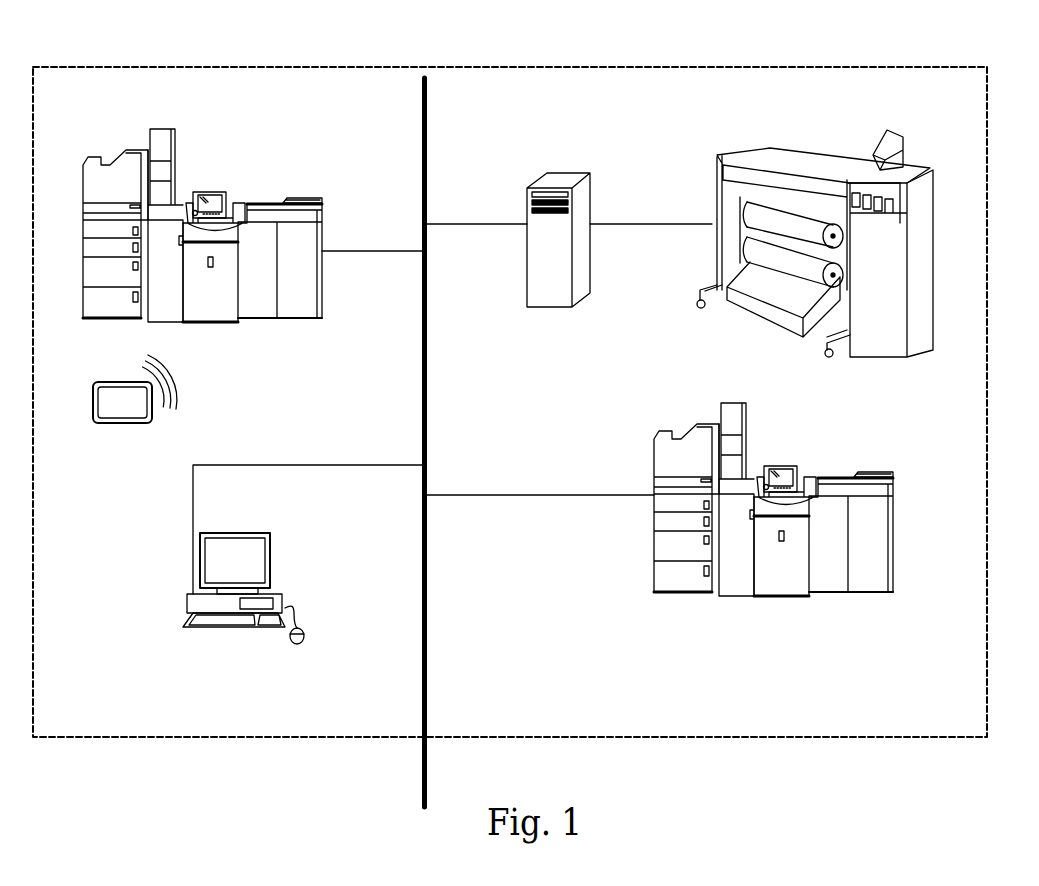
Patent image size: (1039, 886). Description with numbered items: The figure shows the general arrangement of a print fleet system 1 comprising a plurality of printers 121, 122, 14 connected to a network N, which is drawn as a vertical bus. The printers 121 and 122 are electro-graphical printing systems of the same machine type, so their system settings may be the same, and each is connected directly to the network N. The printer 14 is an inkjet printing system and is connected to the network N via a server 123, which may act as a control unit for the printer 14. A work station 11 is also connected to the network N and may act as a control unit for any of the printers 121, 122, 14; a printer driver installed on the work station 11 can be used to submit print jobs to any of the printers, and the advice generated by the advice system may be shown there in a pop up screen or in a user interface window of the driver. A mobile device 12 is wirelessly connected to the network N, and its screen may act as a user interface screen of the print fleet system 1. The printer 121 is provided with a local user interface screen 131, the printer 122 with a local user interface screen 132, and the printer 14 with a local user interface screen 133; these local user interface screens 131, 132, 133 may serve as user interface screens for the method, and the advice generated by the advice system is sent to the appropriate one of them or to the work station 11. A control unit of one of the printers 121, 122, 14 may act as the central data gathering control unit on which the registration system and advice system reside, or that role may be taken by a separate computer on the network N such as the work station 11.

The print fleet system 1 is at (820, 68).
The network N is at (427, 118).
The work station 11 is at (277, 600).
The mobile device 12 is at (105, 423).
The printer 14 is at (790, 219).
The printer 121 is at (209, 252).
The printer 122 is at (781, 527).
The server 123 is at (552, 307).
The local user interface screen 131 is at (217, 192).
The local user interface screen 132 is at (788, 470).
The local user interface screen 133 is at (887, 132).